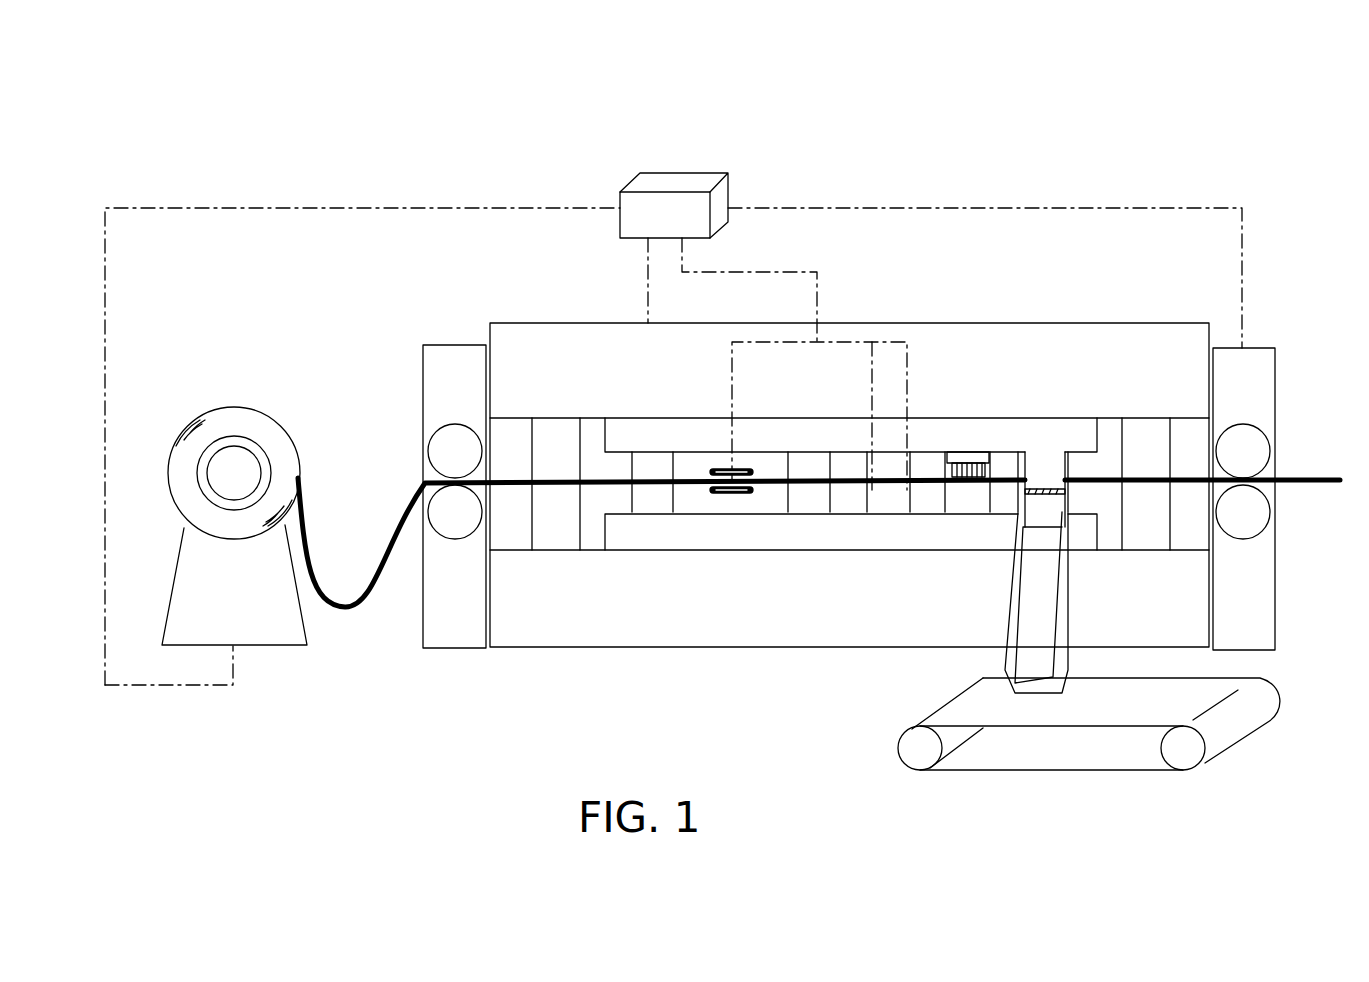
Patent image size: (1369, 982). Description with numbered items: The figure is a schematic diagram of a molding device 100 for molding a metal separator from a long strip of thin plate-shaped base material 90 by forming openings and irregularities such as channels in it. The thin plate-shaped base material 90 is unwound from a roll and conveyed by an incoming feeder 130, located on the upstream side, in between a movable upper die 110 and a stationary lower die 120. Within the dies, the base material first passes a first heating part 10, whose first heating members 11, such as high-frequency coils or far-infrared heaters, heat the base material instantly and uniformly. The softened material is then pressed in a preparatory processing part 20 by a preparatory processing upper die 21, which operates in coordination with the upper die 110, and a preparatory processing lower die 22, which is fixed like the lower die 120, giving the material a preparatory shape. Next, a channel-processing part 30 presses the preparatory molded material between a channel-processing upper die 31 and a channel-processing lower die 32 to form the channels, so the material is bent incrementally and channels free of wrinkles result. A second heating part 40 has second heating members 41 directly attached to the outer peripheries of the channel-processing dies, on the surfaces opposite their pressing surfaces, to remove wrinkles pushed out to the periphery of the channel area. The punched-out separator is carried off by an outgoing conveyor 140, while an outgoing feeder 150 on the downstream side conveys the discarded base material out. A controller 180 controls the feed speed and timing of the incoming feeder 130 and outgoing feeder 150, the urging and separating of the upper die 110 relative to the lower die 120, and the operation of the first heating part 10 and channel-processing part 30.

The molding device 100 is at (140, 79).
The first heating part 10 is at (692, 497).
The first heating members 11 is at (724, 468).
The preparatory processing part 20 is at (803, 505).
The preparatory processing upper die 21 is at (810, 472).
The preparatory processing lower die 22 is at (812, 497).
The channel-processing part 30 is at (880, 505).
The channel-processing upper die 31 is at (886, 472).
The channel-processing lower die 32 is at (887, 497).
The second heating part 40 is at (990, 478).
The second heating members 41 is at (912, 460).
The thin plate-shaped base material 90 is at (237, 410).
The upper die 110 is at (548, 321).
The lower die 120 is at (522, 652).
The incoming feeder 130 is at (438, 380).
The outgoing conveyor 140 is at (1003, 753).
The outgoing feeder 150 is at (1255, 383).
The controller 180 is at (677, 183).